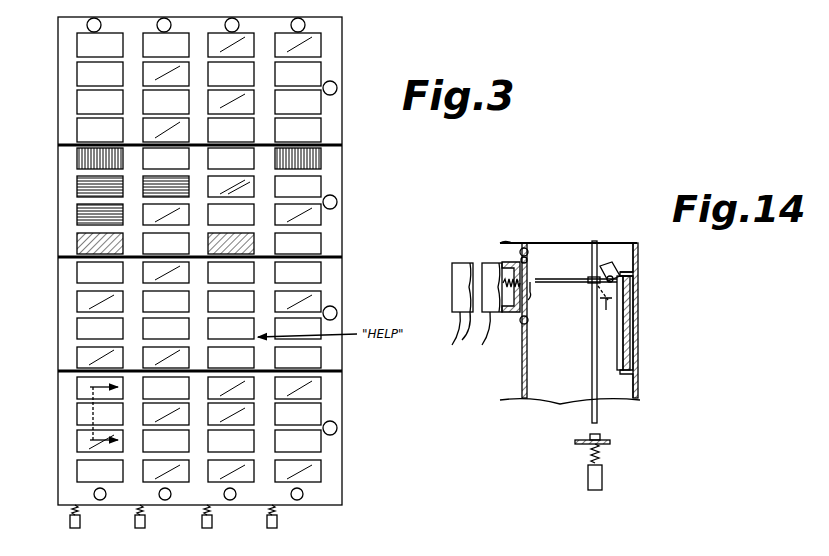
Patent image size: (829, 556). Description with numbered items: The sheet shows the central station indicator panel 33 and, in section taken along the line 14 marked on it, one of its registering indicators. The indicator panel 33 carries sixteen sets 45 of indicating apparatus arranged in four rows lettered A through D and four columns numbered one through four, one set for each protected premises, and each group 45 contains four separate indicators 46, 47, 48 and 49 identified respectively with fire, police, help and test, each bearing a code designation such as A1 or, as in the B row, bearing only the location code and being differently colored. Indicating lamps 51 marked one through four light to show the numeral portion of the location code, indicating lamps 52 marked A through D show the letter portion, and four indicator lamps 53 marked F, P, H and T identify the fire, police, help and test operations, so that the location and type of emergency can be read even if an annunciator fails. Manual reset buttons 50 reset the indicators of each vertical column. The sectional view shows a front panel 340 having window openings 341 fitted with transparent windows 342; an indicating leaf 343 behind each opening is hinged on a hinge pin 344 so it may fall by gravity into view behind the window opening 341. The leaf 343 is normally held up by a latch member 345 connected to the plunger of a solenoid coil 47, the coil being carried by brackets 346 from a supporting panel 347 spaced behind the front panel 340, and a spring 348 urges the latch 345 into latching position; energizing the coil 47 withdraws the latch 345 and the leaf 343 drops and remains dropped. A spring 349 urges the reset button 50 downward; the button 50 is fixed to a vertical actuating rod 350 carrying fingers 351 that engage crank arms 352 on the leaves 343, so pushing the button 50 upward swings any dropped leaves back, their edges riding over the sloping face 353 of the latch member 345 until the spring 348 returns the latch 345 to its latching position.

In FIG. 3, the section line XIV—XIV 14 is at (117, 414).
In FIG. 3, the indicator panel 33 is at (346, 199).
In FIG. 14, the indicator panel 33 is at (642, 392).
In FIG. 3, the sets of indicating apparatus 45 is at (75, 70).
In FIG. 3, the fire indicator 46 is at (122, 48).
In FIG. 3, the police indicator 47 is at (122, 79).
In FIG. 14, the police indicator 47 is at (468, 264).
In FIG. 3, the help indicator 48 is at (122, 107).
In FIG. 3, the test indicator 49 is at (122, 135).
In FIG. 3, the manual reset button 50 is at (72, 531).
In FIG. 14, the manual reset button 50 is at (603, 478).
In FIG. 3, the indicating lamps 51 is at (86, 26).
In FIG. 3, the indicating lamps 52 is at (338, 88).
In FIG. 3, the indicator lamps 53 is at (106, 492).
In FIG. 14, the front panel 340 is at (640, 272).
In FIG. 14, the window openings 341 is at (625, 357).
In FIG. 14, the windows 342 is at (633, 332).
In FIG. 14, the indicating leaf 343 is at (542, 284).
In FIG. 14, the hinge pin 344 is at (631, 250).
In FIG. 14, the latch member 345 is at (523, 282).
In FIG. 14, the brackets 346 is at (510, 314).
In FIG. 14, the supporting panel 347 is at (528, 370).
In FIG. 14, the spring 348 is at (520, 250).
In FIG. 14, the spring 349 is at (604, 444).
In FIG. 14, the vertical actuating rod 350 is at (592, 362).
In FIG. 14, the fingers 351 is at (606, 311).
In FIG. 14, the crank arms 352 is at (609, 264).
In FIG. 14, the sloping face 353 is at (534, 296).